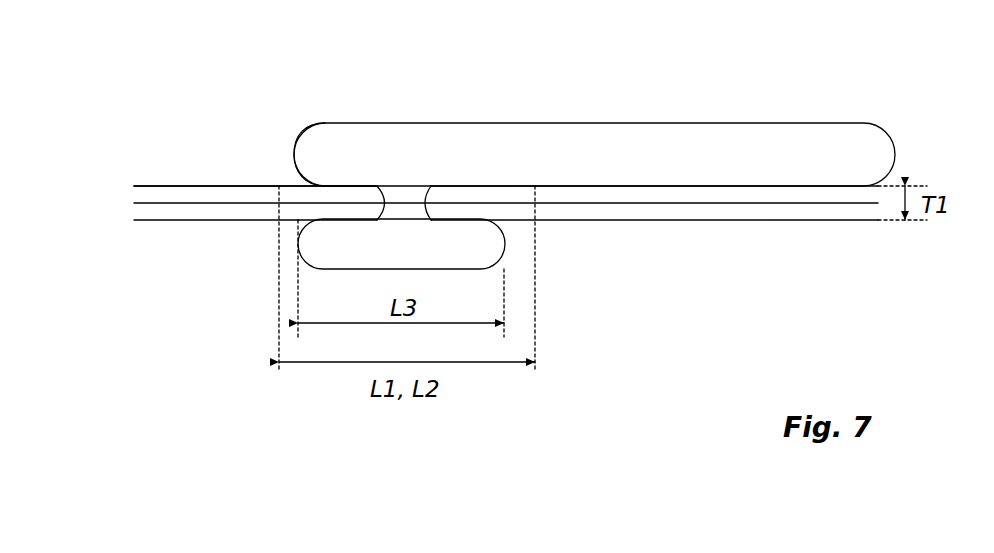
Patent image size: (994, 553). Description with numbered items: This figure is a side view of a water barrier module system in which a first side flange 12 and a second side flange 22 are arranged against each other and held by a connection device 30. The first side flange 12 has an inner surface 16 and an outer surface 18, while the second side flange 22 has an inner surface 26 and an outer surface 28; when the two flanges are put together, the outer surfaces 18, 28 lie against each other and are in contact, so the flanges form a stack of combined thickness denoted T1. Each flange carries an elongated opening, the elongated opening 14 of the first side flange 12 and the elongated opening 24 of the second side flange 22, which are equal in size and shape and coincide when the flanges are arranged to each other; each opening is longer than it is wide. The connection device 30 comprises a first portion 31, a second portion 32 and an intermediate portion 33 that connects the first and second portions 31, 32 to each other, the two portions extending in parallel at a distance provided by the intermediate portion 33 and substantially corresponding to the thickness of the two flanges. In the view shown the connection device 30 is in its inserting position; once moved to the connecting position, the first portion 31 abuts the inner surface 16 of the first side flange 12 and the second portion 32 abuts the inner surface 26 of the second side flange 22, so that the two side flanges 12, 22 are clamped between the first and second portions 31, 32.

The first side flange 12 is at (134, 207).
The elongated opening 14 is at (290, 214).
The inner surface 16 is at (173, 220).
The outer surface 18 is at (743, 203).
The second side flange 22 is at (134, 192).
The elongated opening 24 is at (293, 192).
The inner surface 26 is at (221, 186).
The outer surface 28 is at (775, 205).
The connection device 30 is at (605, 124).
The first portion 31 is at (487, 245).
The second portion 32 is at (352, 128).
The intermediate portion 33 is at (408, 193).